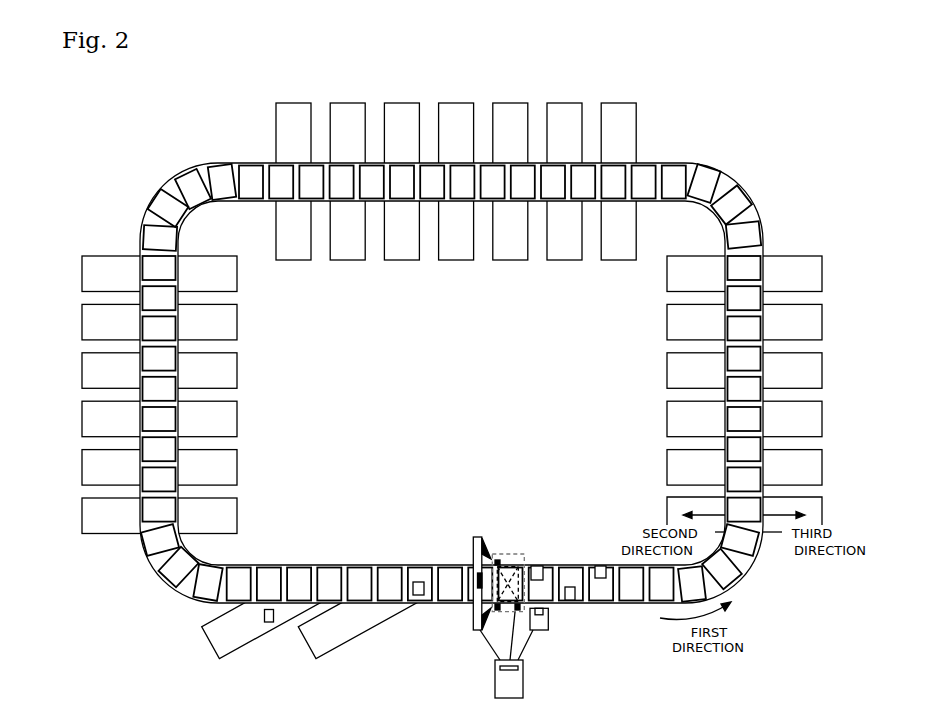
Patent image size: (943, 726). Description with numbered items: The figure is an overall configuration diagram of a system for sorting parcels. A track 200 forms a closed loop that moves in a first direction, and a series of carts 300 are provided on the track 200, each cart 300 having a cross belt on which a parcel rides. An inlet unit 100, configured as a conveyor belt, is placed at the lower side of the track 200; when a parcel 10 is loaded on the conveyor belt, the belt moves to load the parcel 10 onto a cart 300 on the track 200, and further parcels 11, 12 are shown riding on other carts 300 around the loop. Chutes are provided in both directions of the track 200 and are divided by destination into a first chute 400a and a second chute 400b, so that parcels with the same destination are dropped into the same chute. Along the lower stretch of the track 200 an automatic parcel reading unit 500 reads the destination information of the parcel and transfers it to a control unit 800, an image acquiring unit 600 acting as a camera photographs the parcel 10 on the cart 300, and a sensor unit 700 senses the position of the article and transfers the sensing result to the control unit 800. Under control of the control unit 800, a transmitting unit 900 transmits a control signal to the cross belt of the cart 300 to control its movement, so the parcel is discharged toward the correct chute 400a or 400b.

The inlet unit 100 is at (216, 640).
The parcel 10 is at (268, 623).
The sample container 11 is at (417, 597).
The sample container 12 is at (537, 566).
The track 200 is at (153, 566).
The cart 300 is at (171, 574).
The first chute 400a is at (667, 500).
The second chute 400b is at (822, 500).
The automatic parcel reading unit 500 is at (480, 537).
The image acquiring unit 600 is at (477, 566).
The sensor unit 700 is at (507, 555).
The control unit 800 is at (524, 681).
The transmitting unit 900 is at (548, 625).